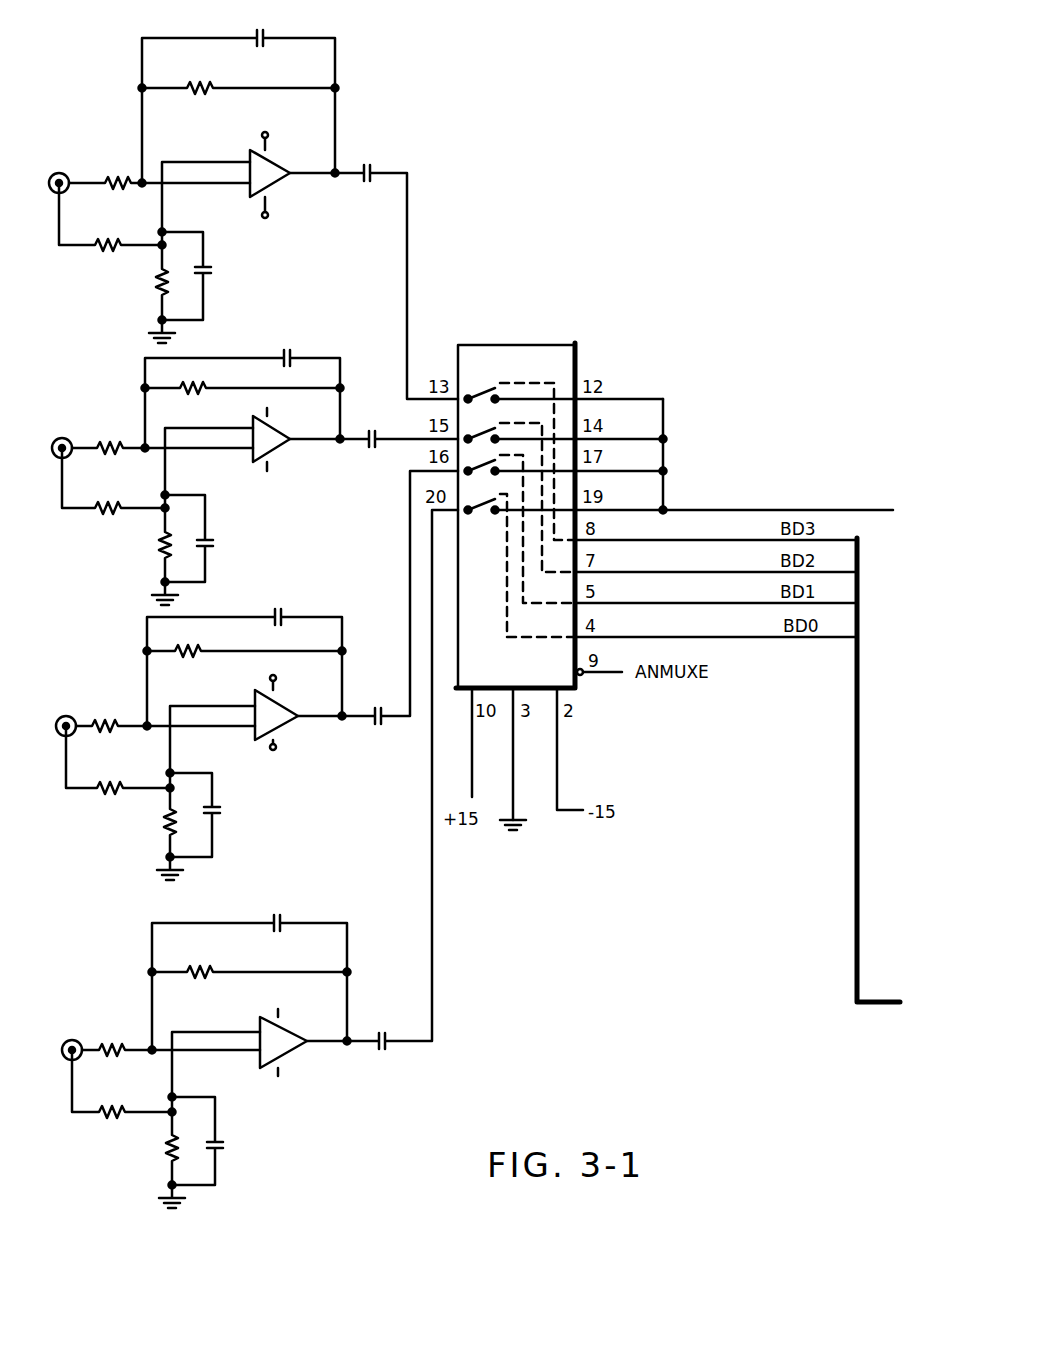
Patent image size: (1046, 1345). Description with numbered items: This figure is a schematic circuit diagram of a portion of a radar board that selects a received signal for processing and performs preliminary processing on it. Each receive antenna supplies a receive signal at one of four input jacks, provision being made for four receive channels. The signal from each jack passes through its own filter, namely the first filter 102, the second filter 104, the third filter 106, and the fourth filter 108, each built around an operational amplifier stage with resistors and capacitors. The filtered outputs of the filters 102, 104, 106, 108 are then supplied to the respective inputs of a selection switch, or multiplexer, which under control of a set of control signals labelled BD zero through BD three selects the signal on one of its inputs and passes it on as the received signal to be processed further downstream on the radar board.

The filter 102 is at (301, 217).
The filter 104 is at (314, 485).
The filter 106 is at (323, 755).
The filter 108 is at (314, 1092).